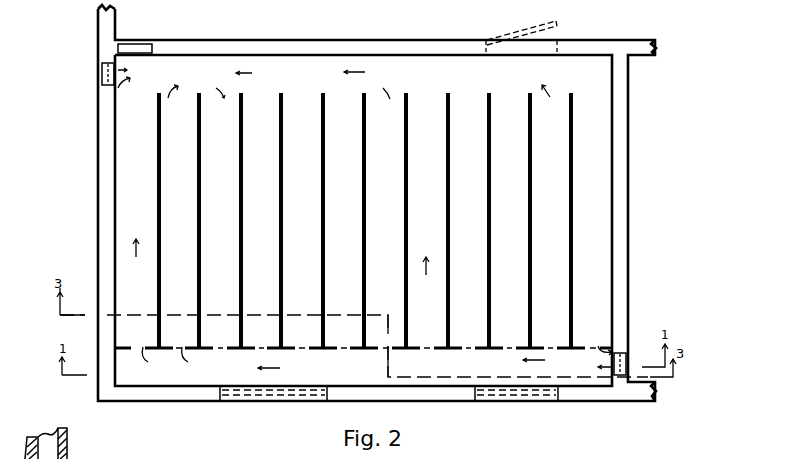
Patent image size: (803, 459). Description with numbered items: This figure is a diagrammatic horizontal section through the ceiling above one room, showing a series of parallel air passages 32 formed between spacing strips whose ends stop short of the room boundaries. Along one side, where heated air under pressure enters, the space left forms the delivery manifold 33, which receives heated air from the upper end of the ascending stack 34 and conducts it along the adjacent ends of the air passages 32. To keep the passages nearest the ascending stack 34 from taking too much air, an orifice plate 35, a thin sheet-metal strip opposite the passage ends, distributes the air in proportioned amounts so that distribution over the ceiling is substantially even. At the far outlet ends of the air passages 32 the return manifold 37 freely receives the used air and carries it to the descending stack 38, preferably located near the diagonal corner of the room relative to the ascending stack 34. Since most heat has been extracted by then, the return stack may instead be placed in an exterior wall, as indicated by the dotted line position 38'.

The air passages 32 is at (365, 220).
The delivery manifold 33 is at (389, 382).
The ascending stack 34 is at (625, 356).
The orifice plate 35 is at (243, 346).
The return manifold 37 is at (363, 220).
The descending stack 38 is at (147, 33).
The dotted line position of descending stack 38' is at (73, 85).